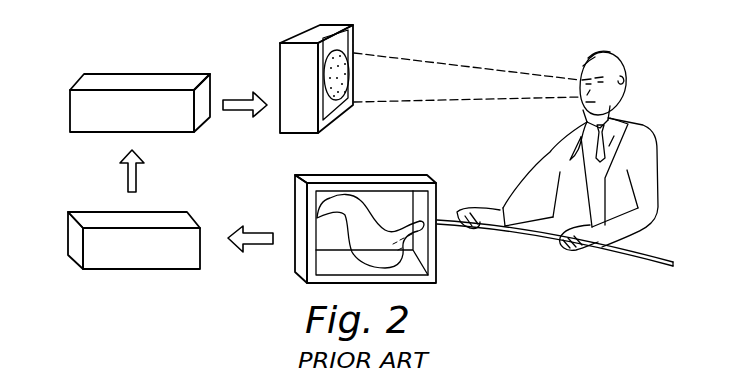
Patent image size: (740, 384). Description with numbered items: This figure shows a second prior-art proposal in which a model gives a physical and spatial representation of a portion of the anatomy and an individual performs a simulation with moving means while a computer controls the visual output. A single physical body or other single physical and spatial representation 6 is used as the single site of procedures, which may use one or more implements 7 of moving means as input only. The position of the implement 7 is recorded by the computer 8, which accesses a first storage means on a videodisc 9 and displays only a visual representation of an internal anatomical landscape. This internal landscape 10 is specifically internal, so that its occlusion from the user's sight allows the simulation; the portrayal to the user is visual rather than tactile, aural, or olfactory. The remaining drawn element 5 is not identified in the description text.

The object under examination 5 is at (403, 207).
The single physical and spatial representation 6 is at (518, 233).
The implement 7 is at (70, 238).
The computer 8 is at (70, 112).
The videodisc 9 is at (280, 60).
The internal landscape 10 is at (489, 80).